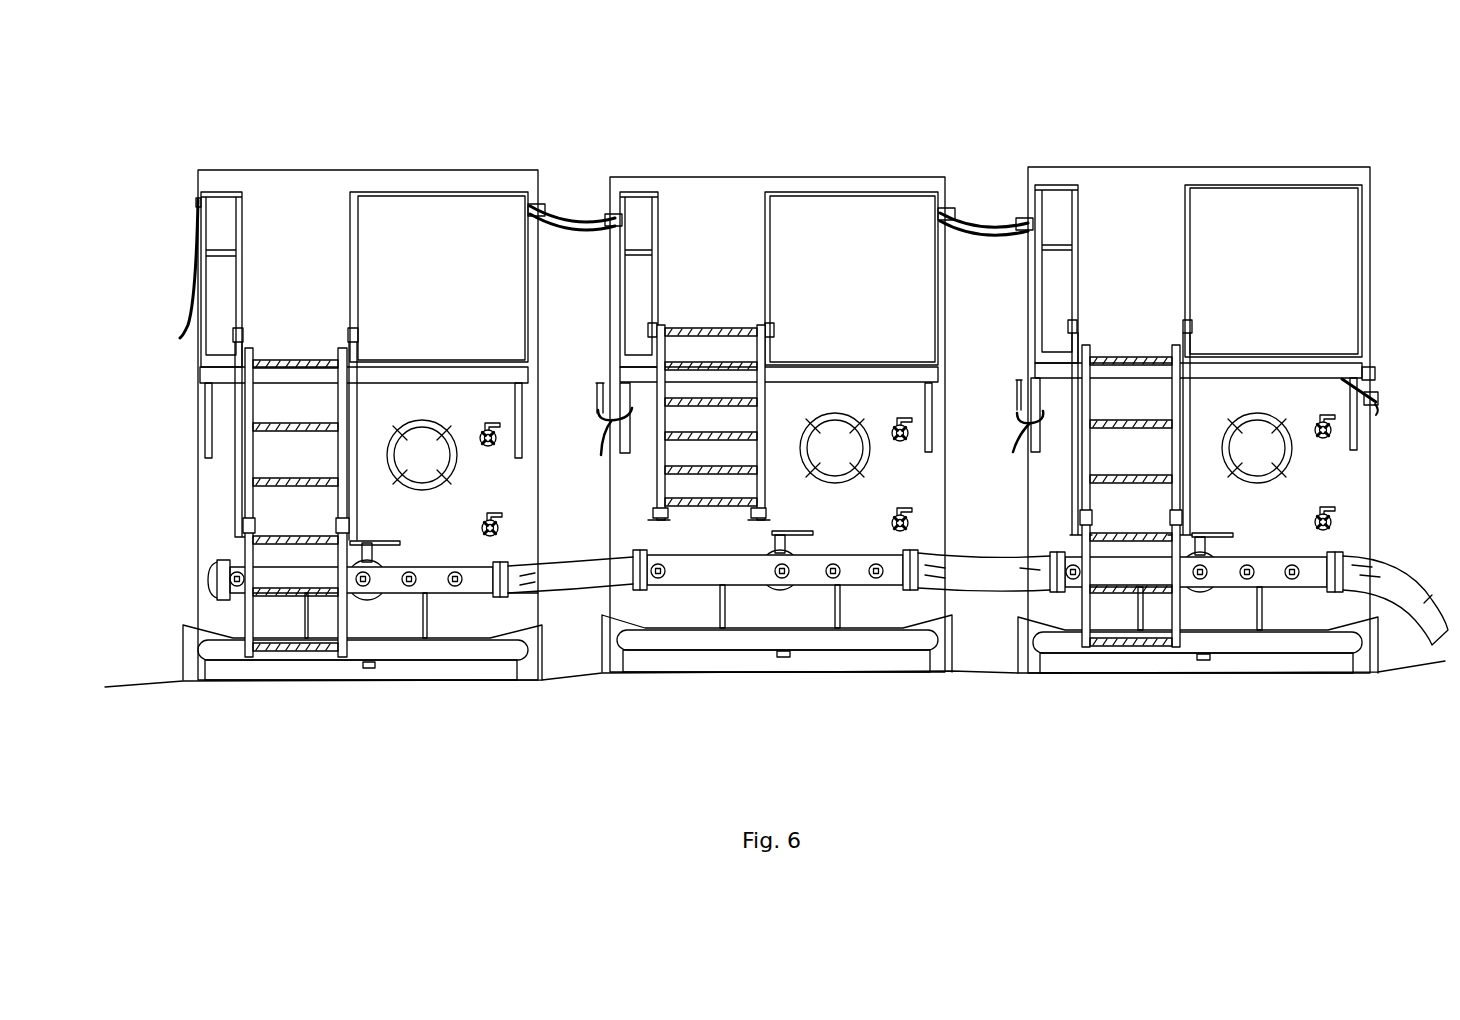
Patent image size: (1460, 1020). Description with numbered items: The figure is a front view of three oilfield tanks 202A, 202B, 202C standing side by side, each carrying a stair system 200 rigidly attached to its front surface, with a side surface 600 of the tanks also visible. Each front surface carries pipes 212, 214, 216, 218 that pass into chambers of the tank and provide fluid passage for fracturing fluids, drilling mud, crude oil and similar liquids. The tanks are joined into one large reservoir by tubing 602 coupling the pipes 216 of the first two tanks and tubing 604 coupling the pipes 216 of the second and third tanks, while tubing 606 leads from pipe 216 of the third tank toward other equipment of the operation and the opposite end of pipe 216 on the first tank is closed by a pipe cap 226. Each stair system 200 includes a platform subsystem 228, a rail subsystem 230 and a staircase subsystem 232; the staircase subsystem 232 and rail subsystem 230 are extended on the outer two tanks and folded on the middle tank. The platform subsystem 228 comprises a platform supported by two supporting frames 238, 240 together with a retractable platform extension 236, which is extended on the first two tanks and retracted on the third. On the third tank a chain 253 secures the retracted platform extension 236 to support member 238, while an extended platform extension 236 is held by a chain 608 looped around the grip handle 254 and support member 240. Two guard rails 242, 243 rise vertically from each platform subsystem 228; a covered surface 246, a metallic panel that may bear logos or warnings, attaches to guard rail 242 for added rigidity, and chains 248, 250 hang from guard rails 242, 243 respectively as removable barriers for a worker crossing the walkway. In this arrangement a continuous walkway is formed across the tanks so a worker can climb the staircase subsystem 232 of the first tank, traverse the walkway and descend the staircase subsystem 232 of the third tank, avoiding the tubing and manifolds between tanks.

The stair system 200 is at (277, 248).
The oilfield tank 202A is at (375, 140).
The oilfield tank 202B is at (778, 142).
The oilfield tank 202C is at (1175, 145).
The pipe 212 is at (497, 433).
The pipe 214 is at (498, 521).
The pipe 216 is at (383, 560).
The pipe 218 is at (440, 470).
The pipe cap 226 is at (209, 580).
The platform subsystem 228 is at (333, 322).
The rail subsystem 230 is at (212, 485).
The staircase subsystem 232 is at (195, 533).
The retractable platform extension 236 is at (551, 370).
The supporting frame 238 is at (515, 403).
The supporting frame 240 is at (622, 388).
The guard rail 242 is at (487, 192).
The guard rail 243 is at (632, 190).
The covered surface 246 is at (437, 285).
The chain 248 is at (578, 236).
The chain 250 is at (197, 270).
The chain 253 is at (1376, 403).
The grip handle 254 is at (597, 395).
The side surface 600 is at (190, 400).
The tubing 602 is at (552, 605).
The tubing 604 is at (950, 598).
The tubing 606 is at (1432, 665).
The chain 608 is at (610, 422).